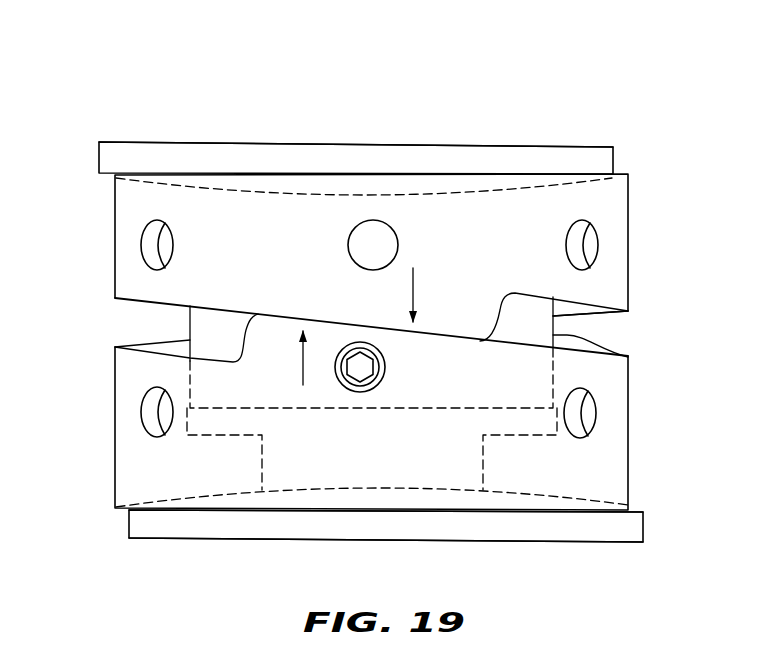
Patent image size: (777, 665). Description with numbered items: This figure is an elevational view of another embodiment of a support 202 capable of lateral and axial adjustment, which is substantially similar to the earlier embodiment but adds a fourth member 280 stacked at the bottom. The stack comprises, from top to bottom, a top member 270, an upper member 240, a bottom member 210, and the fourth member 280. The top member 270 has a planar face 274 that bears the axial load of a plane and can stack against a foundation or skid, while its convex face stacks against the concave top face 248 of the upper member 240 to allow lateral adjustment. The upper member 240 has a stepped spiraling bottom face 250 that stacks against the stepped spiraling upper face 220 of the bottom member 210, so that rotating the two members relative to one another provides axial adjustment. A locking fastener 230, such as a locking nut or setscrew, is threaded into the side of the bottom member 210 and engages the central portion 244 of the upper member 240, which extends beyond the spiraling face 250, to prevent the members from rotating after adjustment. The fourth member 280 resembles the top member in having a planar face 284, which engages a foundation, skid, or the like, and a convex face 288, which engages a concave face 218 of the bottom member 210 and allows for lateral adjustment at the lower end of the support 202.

The support 202 is at (97, 91).
The top member 270 is at (309, 139).
The planar face 274 is at (502, 143).
The concave top face 248 is at (608, 180).
The upper member 240 is at (360, 279).
The central portion 244 is at (628, 356).
The spiraling upper face 220 is at (384, 391).
The spiraling bottom face 250 is at (618, 312).
The locking fastener 230 is at (383, 380).
The bottom member 210 is at (323, 448).
The concave face 218 is at (129, 510).
The fourth member 280 is at (434, 529).
The convex face 288 is at (632, 510).
The planar face 284 is at (590, 542).